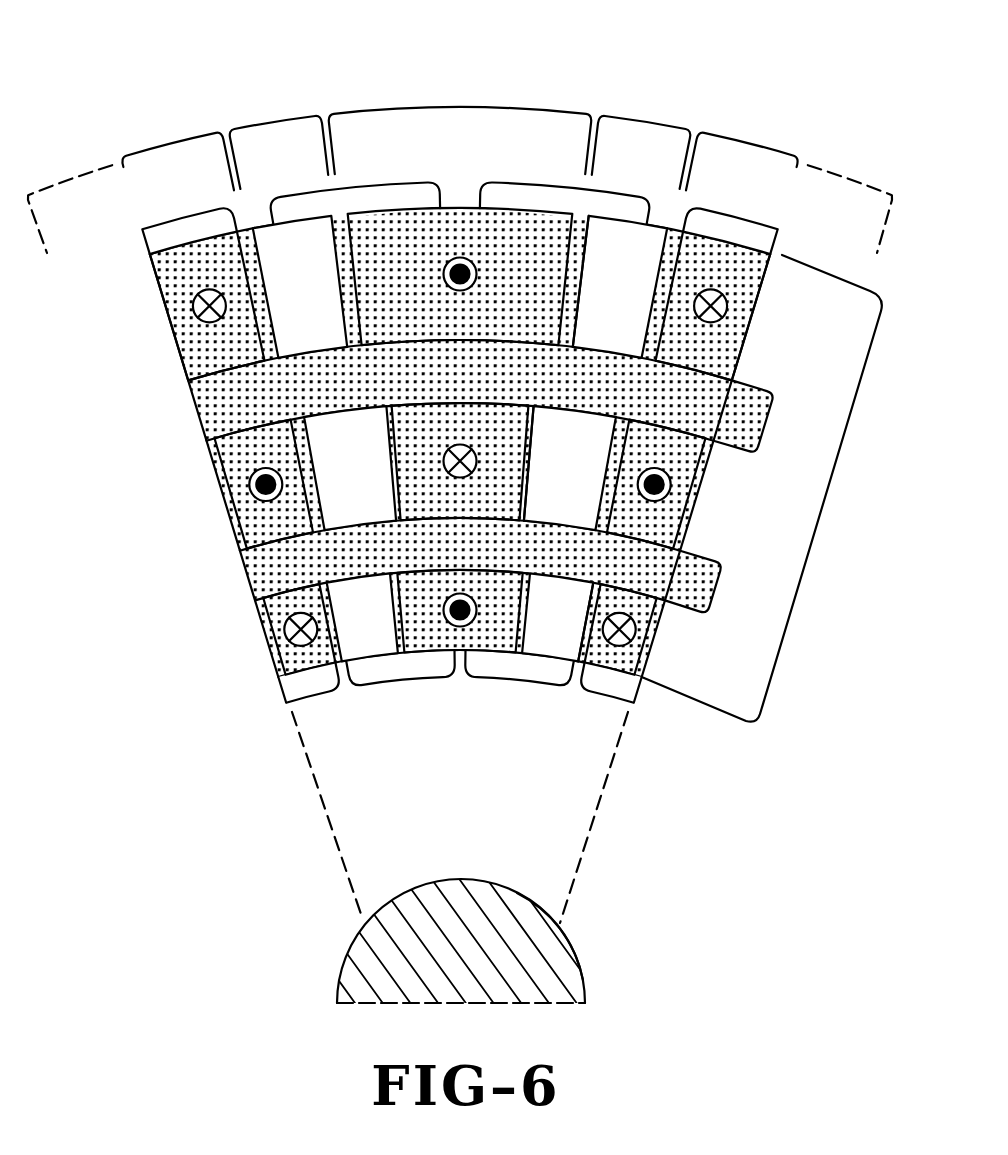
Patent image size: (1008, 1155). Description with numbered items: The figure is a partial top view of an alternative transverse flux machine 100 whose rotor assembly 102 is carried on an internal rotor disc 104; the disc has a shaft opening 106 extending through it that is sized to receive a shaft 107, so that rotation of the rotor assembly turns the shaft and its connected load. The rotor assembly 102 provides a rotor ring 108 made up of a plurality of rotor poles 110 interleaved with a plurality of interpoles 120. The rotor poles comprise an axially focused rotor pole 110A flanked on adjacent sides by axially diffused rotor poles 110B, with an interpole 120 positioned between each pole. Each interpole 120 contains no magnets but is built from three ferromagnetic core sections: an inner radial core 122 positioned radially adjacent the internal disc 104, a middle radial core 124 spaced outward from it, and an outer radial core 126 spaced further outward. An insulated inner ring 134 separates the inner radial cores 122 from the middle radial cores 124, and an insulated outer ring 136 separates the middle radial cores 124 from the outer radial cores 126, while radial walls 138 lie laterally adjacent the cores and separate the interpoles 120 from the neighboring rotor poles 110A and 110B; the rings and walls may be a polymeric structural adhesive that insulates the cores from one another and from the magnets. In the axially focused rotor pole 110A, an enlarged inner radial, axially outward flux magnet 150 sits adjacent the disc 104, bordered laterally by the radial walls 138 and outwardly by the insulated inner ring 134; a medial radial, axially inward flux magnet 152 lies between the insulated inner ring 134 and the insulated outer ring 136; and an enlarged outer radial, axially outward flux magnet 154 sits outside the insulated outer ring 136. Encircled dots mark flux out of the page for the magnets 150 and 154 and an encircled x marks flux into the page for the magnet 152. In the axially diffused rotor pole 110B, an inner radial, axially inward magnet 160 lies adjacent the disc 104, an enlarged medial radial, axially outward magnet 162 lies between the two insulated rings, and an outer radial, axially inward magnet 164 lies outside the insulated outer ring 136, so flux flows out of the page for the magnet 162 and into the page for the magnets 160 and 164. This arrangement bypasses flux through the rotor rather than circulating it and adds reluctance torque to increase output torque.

The transverse flux machine 100 is at (642, 834).
The rotor assembly 102 is at (460, 471).
The internal rotor disc 104 is at (438, 819).
The shaft opening 106 is at (460, 882).
The shaft 107 is at (517, 893).
The rotor ring 108 is at (820, 512).
The rotor poles 110 is at (540, 100).
The axially focused rotor pole 110A is at (463, 107).
The axially diffused rotor pole 110B is at (124, 160).
The interpoles 120 is at (280, 122).
The inner radial core 122 is at (372, 620).
The middle radial core 124 is at (552, 448).
The outer radial core 126 is at (270, 266).
The insulated inner ring 134 is at (717, 593).
The insulated outer ring 136 is at (770, 432).
The radial walls 138 is at (663, 302).
The enlarged inner radial, axially outward flux magnet 150 is at (488, 625).
The medial radial, axially inward flux magnet 152 is at (423, 457).
The enlarged outer radial, axially outward flux magnet 154 is at (400, 287).
The inner radial, axially inward magnet 160 is at (282, 615).
The enlarged medial radial, axially outward magnet 162 is at (255, 515).
The outer radial, axially inward magnet 164 is at (200, 340).